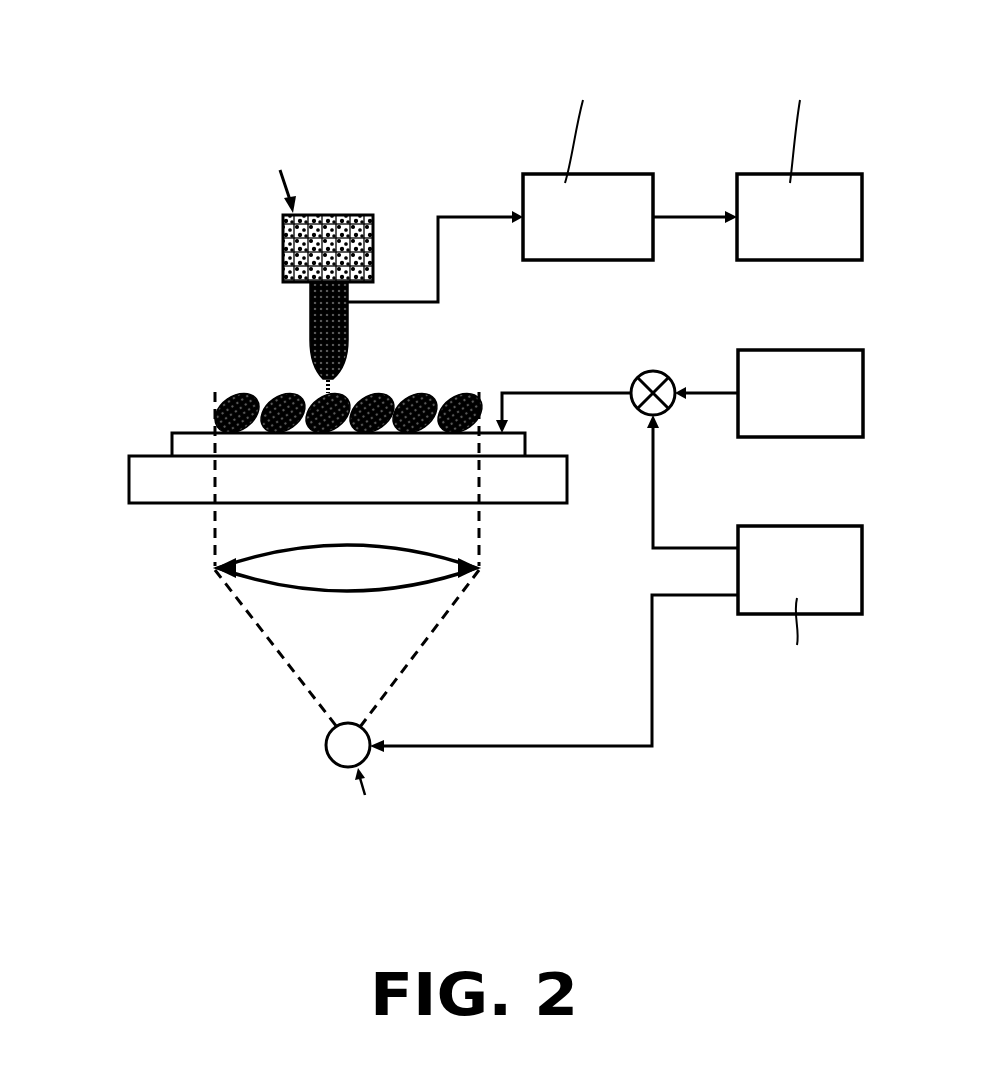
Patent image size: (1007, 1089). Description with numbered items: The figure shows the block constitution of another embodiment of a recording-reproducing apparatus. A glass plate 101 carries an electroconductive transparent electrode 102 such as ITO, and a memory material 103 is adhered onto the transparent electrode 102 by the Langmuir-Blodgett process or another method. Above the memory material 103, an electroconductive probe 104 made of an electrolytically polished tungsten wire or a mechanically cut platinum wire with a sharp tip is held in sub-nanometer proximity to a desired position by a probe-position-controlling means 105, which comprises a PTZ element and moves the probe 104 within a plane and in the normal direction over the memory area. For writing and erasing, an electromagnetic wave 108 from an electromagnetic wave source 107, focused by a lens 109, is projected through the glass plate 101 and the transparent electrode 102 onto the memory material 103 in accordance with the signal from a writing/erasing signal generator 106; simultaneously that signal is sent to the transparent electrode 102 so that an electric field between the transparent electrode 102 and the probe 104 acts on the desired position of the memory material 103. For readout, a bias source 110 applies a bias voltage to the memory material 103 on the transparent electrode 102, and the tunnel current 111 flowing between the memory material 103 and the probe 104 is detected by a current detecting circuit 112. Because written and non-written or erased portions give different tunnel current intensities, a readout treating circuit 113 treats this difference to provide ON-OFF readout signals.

The glass plate 101 is at (140, 482).
The electroconductive transparent electrode 102 is at (185, 440).
The memory material 103 is at (237, 395).
The probe 104 is at (310, 300).
The probe-position-controlling means 105 is at (324, 214).
The writing/erasing signal generator 106 is at (790, 525).
The electromagnetic wave source 107 is at (345, 744).
The electromagnetic wave 108 is at (458, 537).
The lens 109 is at (213, 567).
The bias source 110 is at (808, 348).
The tunnel current 111 is at (333, 387).
The current detecting circuit 112 is at (600, 172).
The readout treating circuit 113 is at (815, 172).